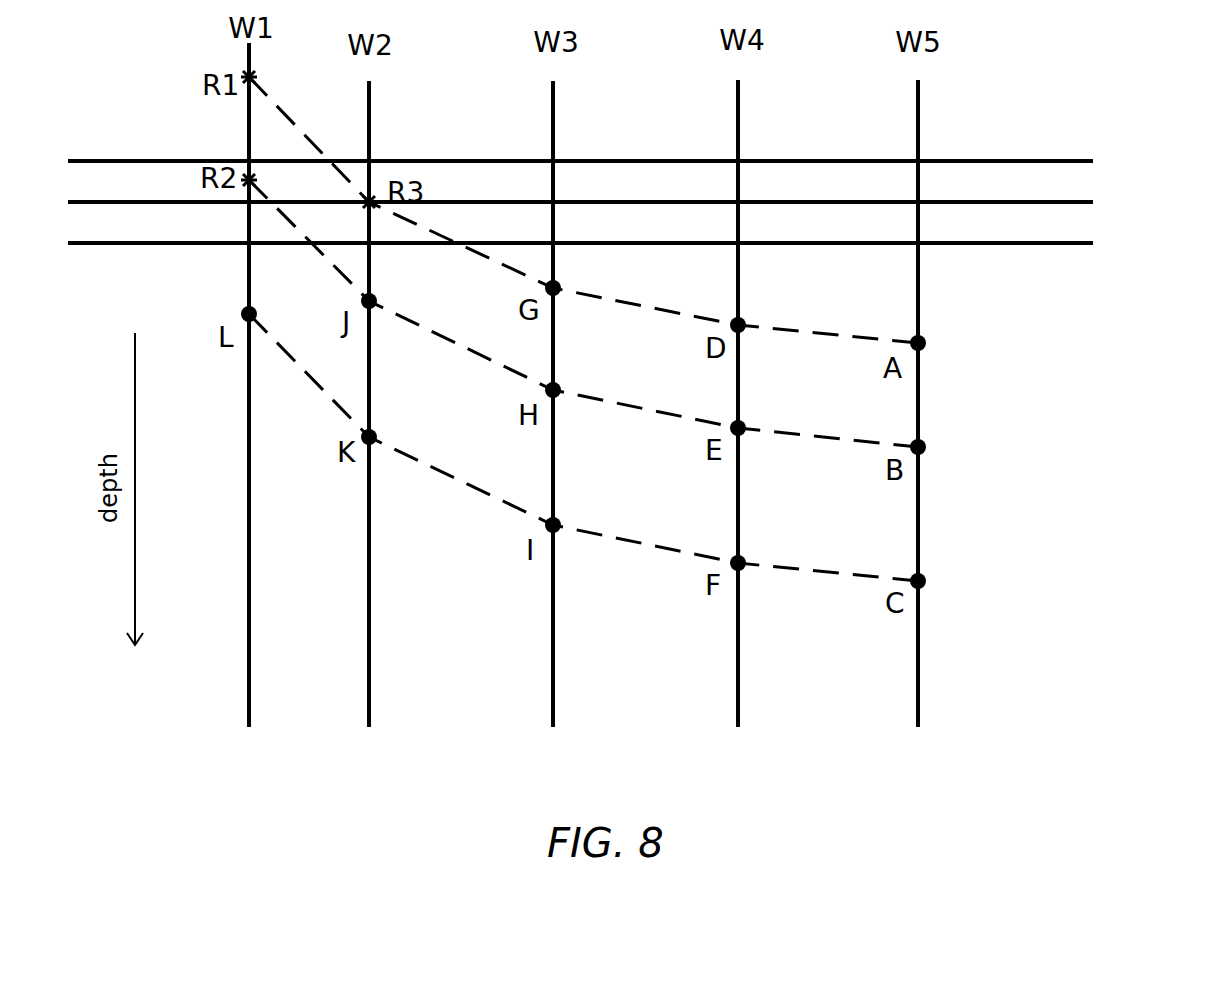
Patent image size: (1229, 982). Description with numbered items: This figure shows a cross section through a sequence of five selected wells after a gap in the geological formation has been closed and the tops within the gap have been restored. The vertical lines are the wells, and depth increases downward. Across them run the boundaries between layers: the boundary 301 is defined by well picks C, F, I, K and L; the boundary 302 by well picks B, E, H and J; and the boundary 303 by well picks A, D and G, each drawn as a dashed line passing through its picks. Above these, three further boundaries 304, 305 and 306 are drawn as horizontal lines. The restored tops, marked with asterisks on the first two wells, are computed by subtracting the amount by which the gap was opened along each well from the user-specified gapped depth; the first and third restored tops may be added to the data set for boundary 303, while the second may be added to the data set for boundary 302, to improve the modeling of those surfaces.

The boundary 301 is at (967, 585).
The boundary 302 is at (962, 452).
The boundary 303 is at (962, 349).
The boundary 304 is at (1112, 246).
The boundary 305 is at (1112, 202).
The boundary 306 is at (1112, 154).